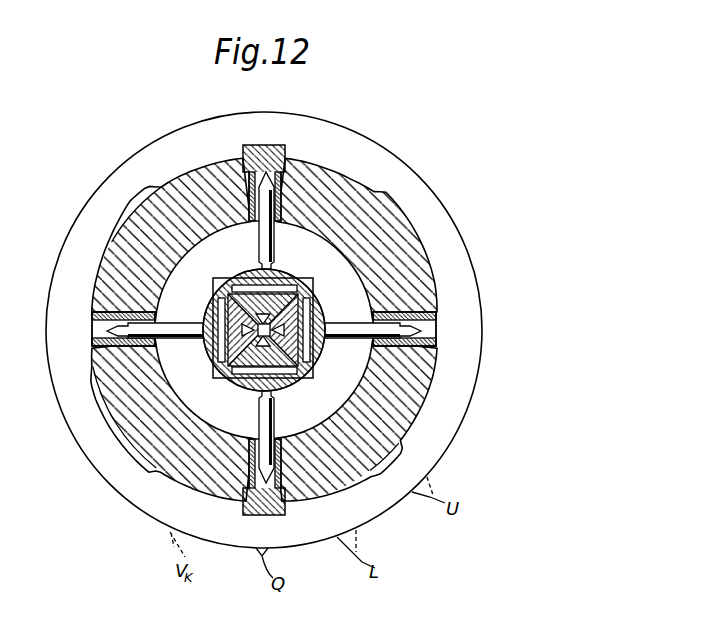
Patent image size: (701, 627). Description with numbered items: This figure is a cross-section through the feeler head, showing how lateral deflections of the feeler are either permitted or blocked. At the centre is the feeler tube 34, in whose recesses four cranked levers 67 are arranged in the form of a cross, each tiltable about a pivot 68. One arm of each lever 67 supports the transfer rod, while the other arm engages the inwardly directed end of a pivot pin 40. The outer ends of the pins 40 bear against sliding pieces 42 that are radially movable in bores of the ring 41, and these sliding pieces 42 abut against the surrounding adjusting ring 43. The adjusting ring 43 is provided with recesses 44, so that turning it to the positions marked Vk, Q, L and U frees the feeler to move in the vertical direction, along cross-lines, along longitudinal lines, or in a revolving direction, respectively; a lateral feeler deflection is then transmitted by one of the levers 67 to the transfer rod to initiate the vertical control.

The feeler tube 34 is at (313, 350).
The pivot pin 40 is at (437, 322).
The ring 41 is at (403, 417).
The sliding piece 42 is at (437, 341).
The adjusting ring 43 is at (465, 282).
The recess 44 is at (137, 205).
The cranked lever 67 is at (279, 273).
The pivot 68 is at (292, 283).